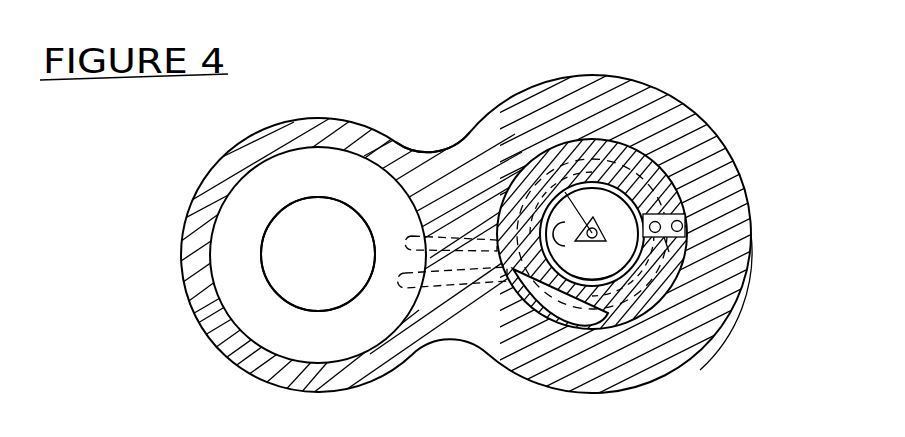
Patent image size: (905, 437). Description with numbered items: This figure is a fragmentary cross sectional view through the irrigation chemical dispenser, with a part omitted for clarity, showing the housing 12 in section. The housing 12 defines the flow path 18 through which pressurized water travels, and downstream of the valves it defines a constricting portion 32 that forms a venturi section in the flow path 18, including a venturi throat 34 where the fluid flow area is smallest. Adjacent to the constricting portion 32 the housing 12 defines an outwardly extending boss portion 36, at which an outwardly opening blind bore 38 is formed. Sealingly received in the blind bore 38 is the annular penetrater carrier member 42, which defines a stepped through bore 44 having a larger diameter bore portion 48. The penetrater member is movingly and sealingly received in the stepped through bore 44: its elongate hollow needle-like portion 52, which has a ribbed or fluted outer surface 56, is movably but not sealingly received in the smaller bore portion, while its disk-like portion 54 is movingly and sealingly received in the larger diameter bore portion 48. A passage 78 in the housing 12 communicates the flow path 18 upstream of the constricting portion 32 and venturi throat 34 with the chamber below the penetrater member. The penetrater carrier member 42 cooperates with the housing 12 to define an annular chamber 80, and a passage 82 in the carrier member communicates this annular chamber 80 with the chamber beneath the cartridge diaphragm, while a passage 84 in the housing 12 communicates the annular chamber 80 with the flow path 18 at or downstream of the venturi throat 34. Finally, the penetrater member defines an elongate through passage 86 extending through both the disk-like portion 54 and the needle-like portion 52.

The housing 12 is at (200, 203).
The flow path 18 is at (335, 246).
The constricting portion 32 is at (255, 327).
The venturi throat 34 is at (278, 295).
The boss portion 36 is at (653, 120).
The blind bore 38 is at (590, 322).
The penetrater carrier member 42 is at (592, 145).
The stepped through bore 44 is at (610, 263).
The larger diameter bore portion 48 is at (609, 193).
The needle-like portion 52 is at (592, 233).
The disk-like portion 54 is at (580, 190).
The ribbed or fluted outer surface 56 is at (684, 205).
The passage 78 is at (460, 267).
The annular chamber 80 is at (455, 135).
The passage 82 is at (685, 290).
The passage 84 is at (440, 283).
The elongate through passage 86 is at (565, 192).